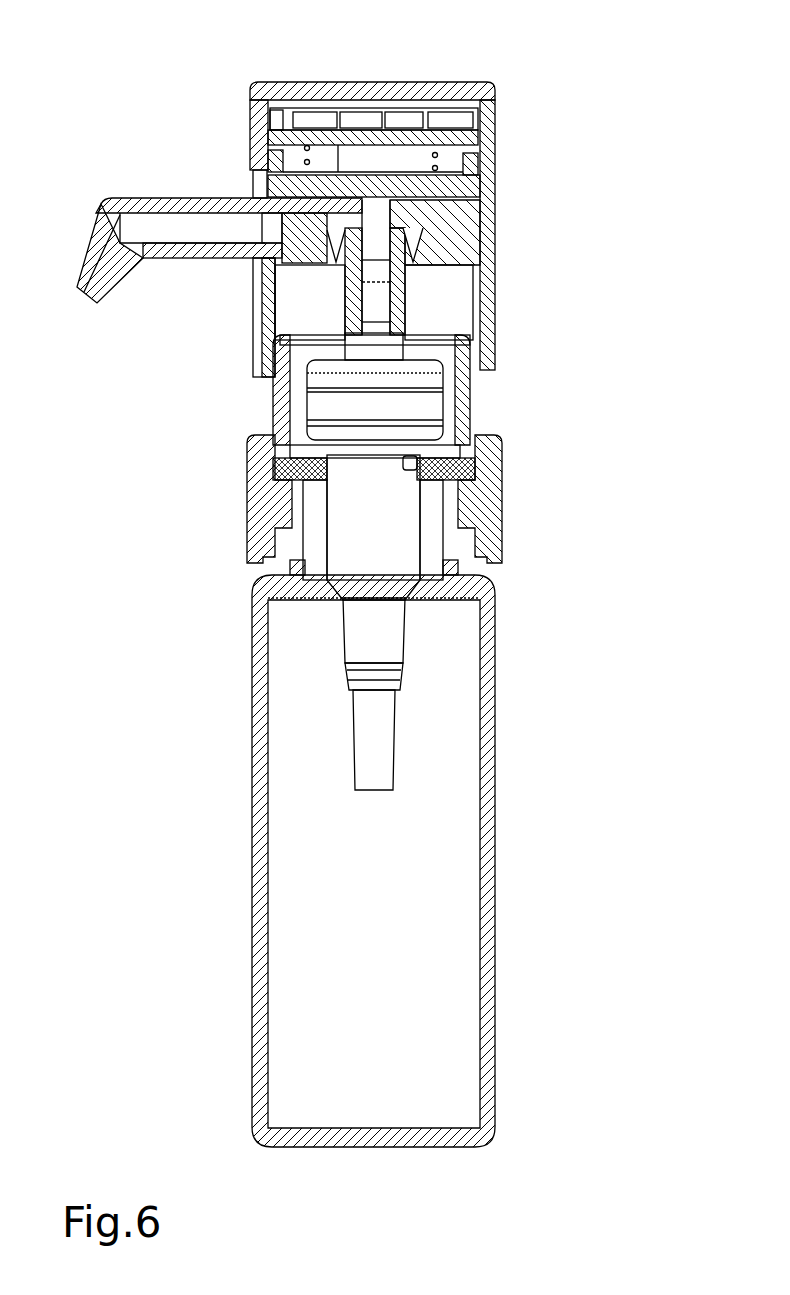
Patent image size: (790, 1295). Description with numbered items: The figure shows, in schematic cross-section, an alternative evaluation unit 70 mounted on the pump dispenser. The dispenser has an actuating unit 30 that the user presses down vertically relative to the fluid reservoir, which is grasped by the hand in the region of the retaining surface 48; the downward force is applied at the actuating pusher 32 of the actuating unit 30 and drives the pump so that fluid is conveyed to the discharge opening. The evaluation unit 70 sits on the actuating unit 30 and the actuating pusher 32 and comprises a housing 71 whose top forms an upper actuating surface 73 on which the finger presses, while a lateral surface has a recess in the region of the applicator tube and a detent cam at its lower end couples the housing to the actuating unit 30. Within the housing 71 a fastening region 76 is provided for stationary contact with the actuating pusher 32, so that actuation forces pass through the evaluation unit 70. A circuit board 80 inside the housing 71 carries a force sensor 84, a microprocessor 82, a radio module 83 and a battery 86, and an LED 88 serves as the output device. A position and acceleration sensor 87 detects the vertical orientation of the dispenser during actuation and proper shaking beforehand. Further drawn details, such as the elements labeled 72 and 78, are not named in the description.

The actuating unit 30 is at (403, 308).
The actuating pusher 32 is at (493, 277).
The retaining surface 48 is at (493, 740).
The evaluation unit 70 is at (380, 302).
The housing 71 is at (262, 95).
The retaining block 72 is at (265, 157).
The upper actuating surface 73 is at (308, 82).
The fastening region 76 is at (490, 172).
The spacer block 78 is at (483, 170).
The circuit board 80 is at (455, 128).
The microprocessor 82 is at (310, 120).
The radio module 83 is at (352, 120).
The force sensor 84 is at (352, 157).
The battery 86 is at (387, 125).
The position and acceleration sensor 87 is at (455, 122).
The LED 88 is at (268, 110).